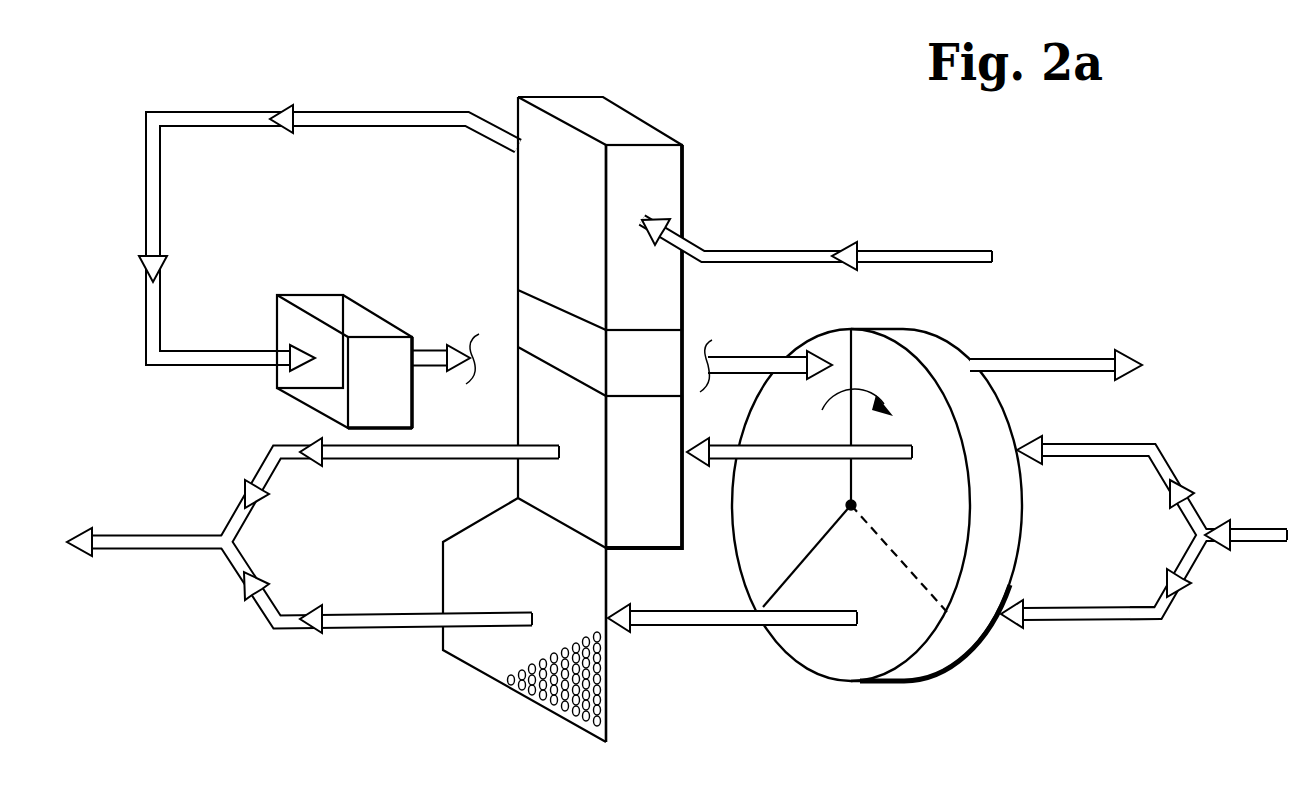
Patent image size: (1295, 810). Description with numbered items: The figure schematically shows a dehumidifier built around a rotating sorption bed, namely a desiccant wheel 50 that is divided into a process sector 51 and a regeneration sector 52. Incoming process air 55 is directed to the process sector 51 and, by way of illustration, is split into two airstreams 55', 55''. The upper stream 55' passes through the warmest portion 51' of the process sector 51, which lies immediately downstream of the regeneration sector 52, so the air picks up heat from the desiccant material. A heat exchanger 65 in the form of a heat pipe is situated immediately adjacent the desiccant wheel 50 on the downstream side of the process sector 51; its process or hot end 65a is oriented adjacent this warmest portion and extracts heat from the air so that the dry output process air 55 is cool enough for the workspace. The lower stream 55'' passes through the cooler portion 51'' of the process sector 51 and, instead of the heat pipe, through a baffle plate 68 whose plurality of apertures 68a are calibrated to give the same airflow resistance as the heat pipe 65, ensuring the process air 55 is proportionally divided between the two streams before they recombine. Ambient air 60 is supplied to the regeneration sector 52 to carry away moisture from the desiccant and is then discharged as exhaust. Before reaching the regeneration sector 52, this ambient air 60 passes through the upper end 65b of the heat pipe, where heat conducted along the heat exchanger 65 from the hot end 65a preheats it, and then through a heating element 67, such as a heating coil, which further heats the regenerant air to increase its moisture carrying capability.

The desiccant wheel 50 is at (860, 668).
The process sector 51 is at (807, 556).
The warmest portion of the process sector 51' is at (899, 550).
The cooler portion of the process sector 51'' is at (875, 564).
The regeneration sector 52 is at (794, 432).
The process air 55 is at (679, 535).
The upper process airstream 55' is at (1084, 436).
The lower process airstream 55'' is at (1079, 631).
The ambient air 60 is at (952, 252).
The heat exchanger 65 is at (694, 193).
The process end of the heat exchanger 65a is at (658, 480).
The upper end of the heat pipe 65b is at (654, 189).
The heating element 67 is at (330, 295).
The baffle plate 68 is at (470, 640).
The apertures 68a is at (607, 705).